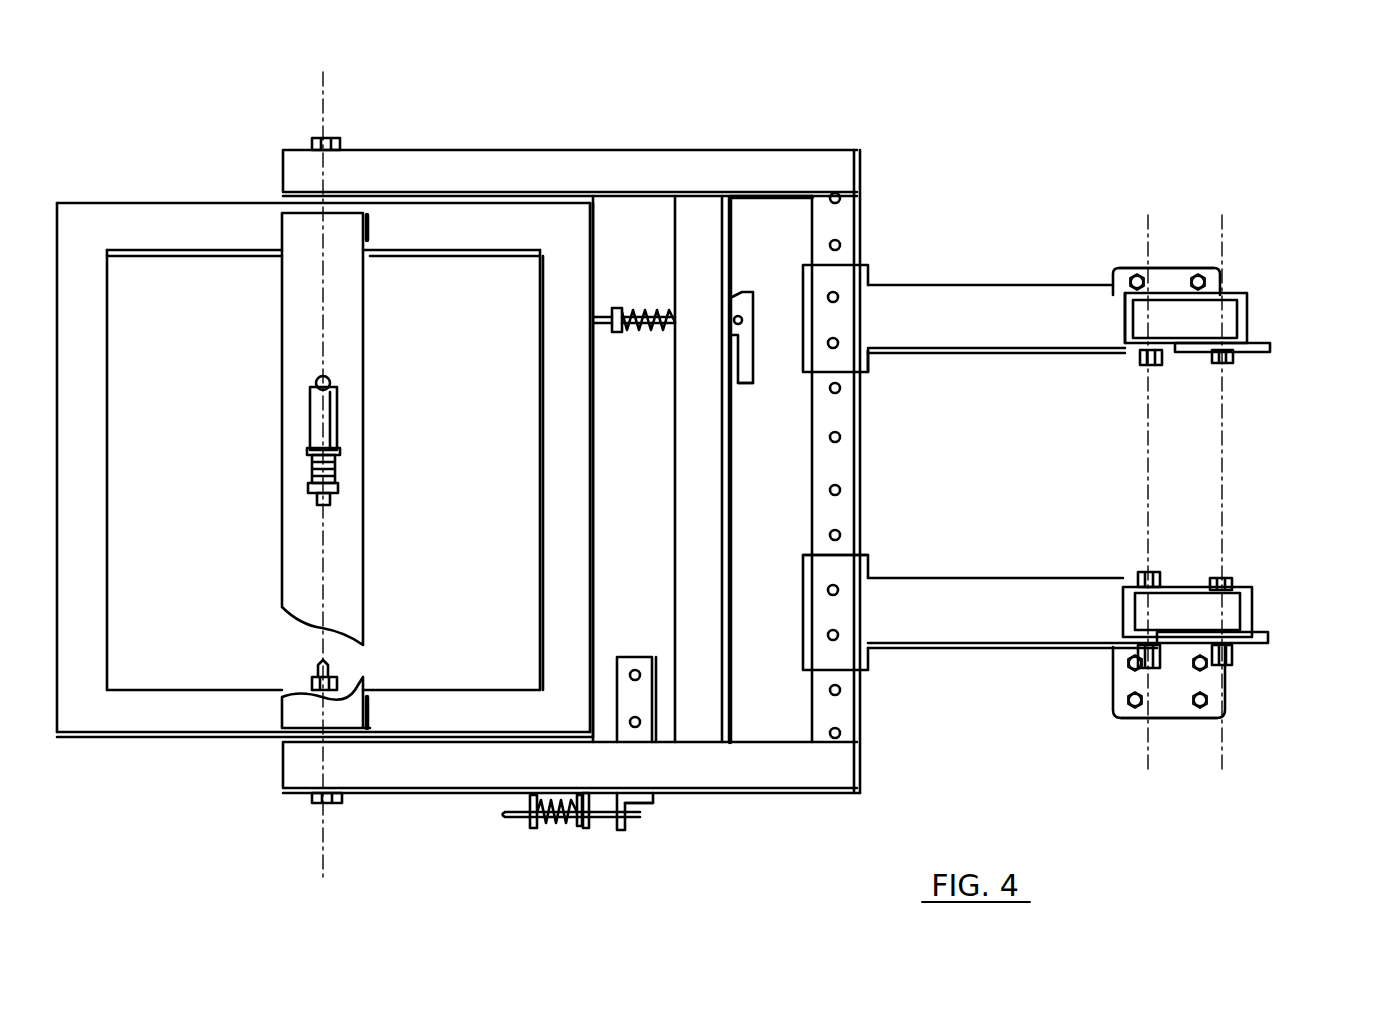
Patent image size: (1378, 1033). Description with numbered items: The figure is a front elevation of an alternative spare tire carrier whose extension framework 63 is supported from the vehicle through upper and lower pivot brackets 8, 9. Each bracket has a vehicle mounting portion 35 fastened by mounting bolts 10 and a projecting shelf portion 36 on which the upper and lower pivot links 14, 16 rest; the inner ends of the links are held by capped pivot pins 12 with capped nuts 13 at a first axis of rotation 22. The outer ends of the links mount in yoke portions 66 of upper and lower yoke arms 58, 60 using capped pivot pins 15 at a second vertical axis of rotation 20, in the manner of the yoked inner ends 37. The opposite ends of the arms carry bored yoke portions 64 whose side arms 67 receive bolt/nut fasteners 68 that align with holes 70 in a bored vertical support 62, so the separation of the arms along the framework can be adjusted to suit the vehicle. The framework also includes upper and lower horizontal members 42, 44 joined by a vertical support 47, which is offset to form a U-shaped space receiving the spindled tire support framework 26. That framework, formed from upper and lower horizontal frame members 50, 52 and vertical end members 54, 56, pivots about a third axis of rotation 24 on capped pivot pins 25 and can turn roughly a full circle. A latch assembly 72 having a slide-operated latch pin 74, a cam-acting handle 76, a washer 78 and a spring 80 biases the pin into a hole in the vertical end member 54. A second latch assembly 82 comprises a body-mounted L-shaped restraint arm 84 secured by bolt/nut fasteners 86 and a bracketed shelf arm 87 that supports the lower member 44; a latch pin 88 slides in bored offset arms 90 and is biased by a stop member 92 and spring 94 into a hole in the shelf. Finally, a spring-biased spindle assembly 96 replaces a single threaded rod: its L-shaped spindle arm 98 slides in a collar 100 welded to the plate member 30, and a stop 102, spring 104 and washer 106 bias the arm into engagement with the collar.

The pivot bracket 8 is at (1186, 262).
The pivot bracket 9 is at (1200, 712).
The mounting bolts 10 is at (1205, 284).
The capped pivot pins 12 is at (1228, 366).
The capped nuts 13 is at (1213, 362).
The upper pivot link 14 is at (1161, 332).
The capped pivot pins 15 is at (1146, 367).
The lower pivot link 16 is at (1161, 628).
The second vertical axis of rotation 20 is at (1148, 476).
The first axis of rotation 22 is at (1216, 476).
The third axis of rotation 24 is at (320, 455).
The capped pivot pins 25 is at (318, 142).
The spindled tire support framework 26 is at (136, 200).
The plate member 30 is at (326, 342).
The vehicle mounting portion 35 is at (1125, 267).
The projecting shelf portions 36 is at (1270, 348).
The yoked inner ends 37 is at (1125, 313).
The upper horizontal member 42 is at (546, 184).
The lower horizontal member 44 is at (551, 777).
The vertical support 47 is at (681, 490).
The upper horizontal frame member 50 is at (174, 242).
The lower horizontal frame member 52 is at (168, 725).
The vertical end member 54 is at (549, 408).
The vertical end member 56 is at (68, 368).
The upper yoke arm 58 is at (964, 322).
The lower yoke arm 60 is at (966, 620).
The vertical support 62 is at (850, 477).
The support frame 63 is at (775, 146).
The bored yoke portions 64 is at (870, 272).
The yoke portion 66 is at (1136, 355).
The side arms 67 is at (870, 355).
The bolt/nut fasteners 68 is at (839, 343).
The holes 70 is at (840, 437).
The latch assembly 72 is at (745, 290).
The latch pin 74 is at (600, 316).
The cam-acting handle 76 is at (750, 384).
The washer 78 is at (616, 333).
The spring 80 is at (635, 310).
The second latch assembly 82 is at (648, 820).
The L-shaped restraint arm 84 is at (633, 656).
The bolt/nut fasteners 86 is at (629, 722).
The bracketed shelf arm 87 is at (656, 800).
The latch pin 88 is at (505, 816).
The bored offset arms 90 is at (533, 826).
The stop member 92 is at (580, 826).
The spring 94 is at (558, 823).
The spindle assembly 96 is at (314, 378).
The spindle arm 98 is at (318, 500).
The collar 100 is at (335, 403).
The stop 102 is at (338, 486).
The spring 104 is at (336, 470).
The washer 106 is at (338, 452).